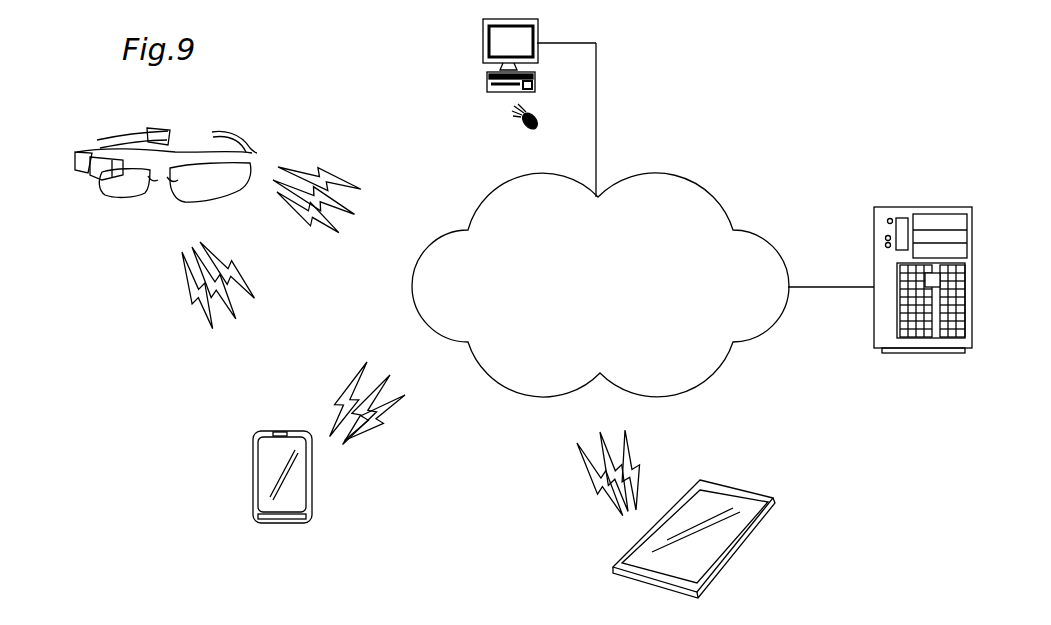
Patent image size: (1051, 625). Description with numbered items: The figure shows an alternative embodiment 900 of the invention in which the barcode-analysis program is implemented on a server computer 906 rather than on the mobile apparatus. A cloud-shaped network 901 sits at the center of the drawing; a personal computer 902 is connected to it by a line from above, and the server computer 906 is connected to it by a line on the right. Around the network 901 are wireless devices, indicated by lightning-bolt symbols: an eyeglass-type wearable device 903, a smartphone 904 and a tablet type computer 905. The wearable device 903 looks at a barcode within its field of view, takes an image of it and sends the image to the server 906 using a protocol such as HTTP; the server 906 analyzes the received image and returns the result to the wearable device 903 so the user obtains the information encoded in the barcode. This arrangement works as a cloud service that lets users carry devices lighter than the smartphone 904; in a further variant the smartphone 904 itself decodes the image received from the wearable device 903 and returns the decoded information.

The alternative embodiment 900 is at (1016, 43).
The network 901 is at (692, 200).
The personal computer 902 is at (537, 28).
The wearable device 903 is at (253, 153).
The smartphone 904 is at (294, 485).
The tablet terminal 905 is at (737, 527).
The server computer 906 is at (963, 250).